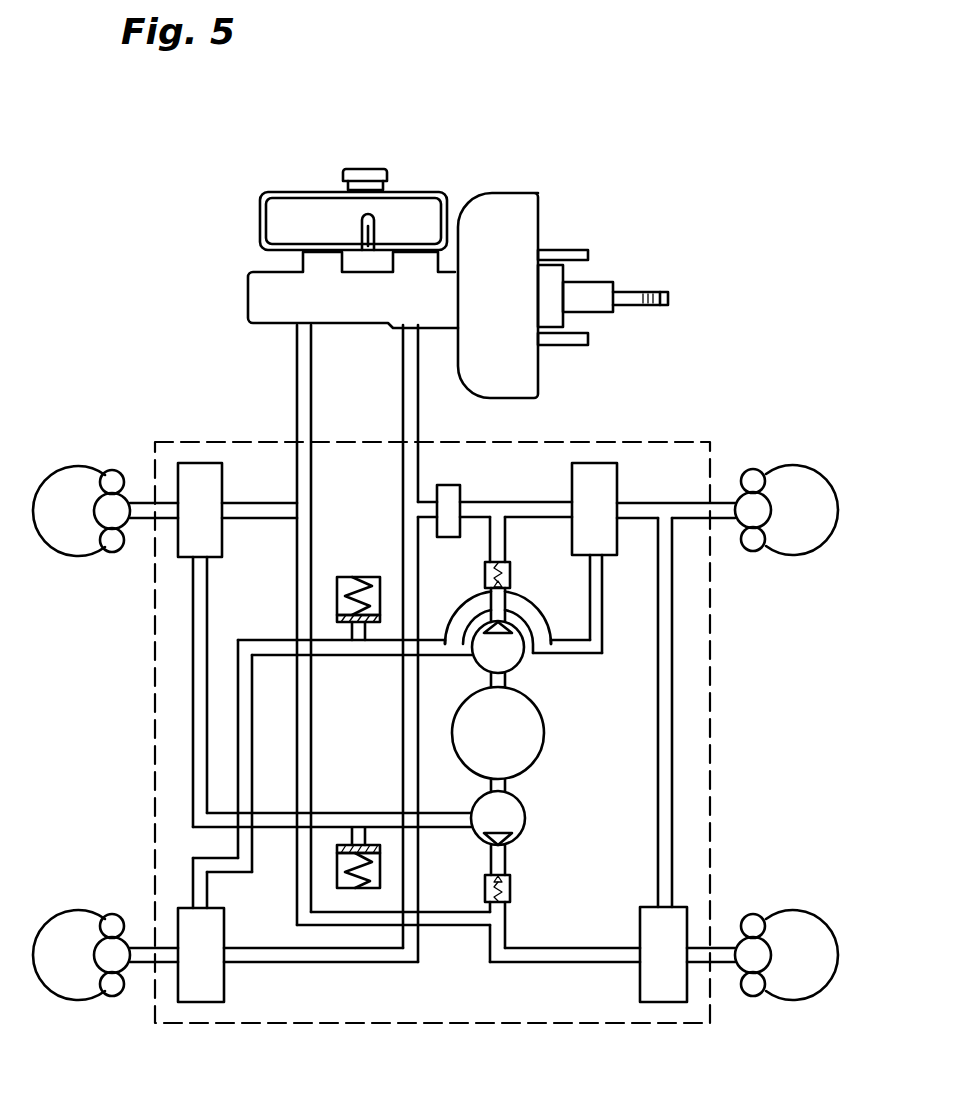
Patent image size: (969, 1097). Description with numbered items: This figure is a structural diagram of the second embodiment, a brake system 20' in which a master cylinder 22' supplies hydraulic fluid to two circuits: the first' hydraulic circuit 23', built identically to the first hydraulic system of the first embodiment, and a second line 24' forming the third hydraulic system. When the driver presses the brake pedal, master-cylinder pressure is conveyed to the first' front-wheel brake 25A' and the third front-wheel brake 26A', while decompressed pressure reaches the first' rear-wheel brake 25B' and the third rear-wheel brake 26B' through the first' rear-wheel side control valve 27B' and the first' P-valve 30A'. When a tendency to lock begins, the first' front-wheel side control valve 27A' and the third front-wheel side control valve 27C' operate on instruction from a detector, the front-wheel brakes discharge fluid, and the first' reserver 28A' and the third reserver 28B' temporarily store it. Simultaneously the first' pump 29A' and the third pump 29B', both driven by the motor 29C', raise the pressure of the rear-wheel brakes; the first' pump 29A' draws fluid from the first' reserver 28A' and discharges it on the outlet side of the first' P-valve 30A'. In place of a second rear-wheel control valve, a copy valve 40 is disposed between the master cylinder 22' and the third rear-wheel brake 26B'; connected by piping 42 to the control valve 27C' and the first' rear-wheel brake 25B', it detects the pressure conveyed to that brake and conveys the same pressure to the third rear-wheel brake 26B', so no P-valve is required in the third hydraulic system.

The brake system 20' is at (432, 555).
The master cylinder 22' is at (417, 283).
The first' hydraulic circuit 23' is at (380, 643).
The brake line 24' is at (356, 625).
The first' front-wheel brake 25A' is at (81, 930).
The first' rear-wheel brake 25B' is at (786, 485).
The third front-wheel brake 26A' is at (81, 488).
The third rear-wheel brake 26B' is at (786, 933).
The first' front-wheel side control valve 27A' is at (233, 953).
The first' rear-wheel side control valve 27B' is at (235, 510).
The third front-wheel side control valve 27C' is at (636, 509).
The first' reserver 28A' is at (357, 580).
The third reserver 28B' is at (345, 917).
The first' pump 29A' is at (526, 611).
The third pump 29B' is at (541, 870).
The motor 29C' is at (538, 732).
The first' P-valve 30A' is at (478, 495).
The copy valve 40 is at (640, 936).
The piping 42 is at (672, 746).